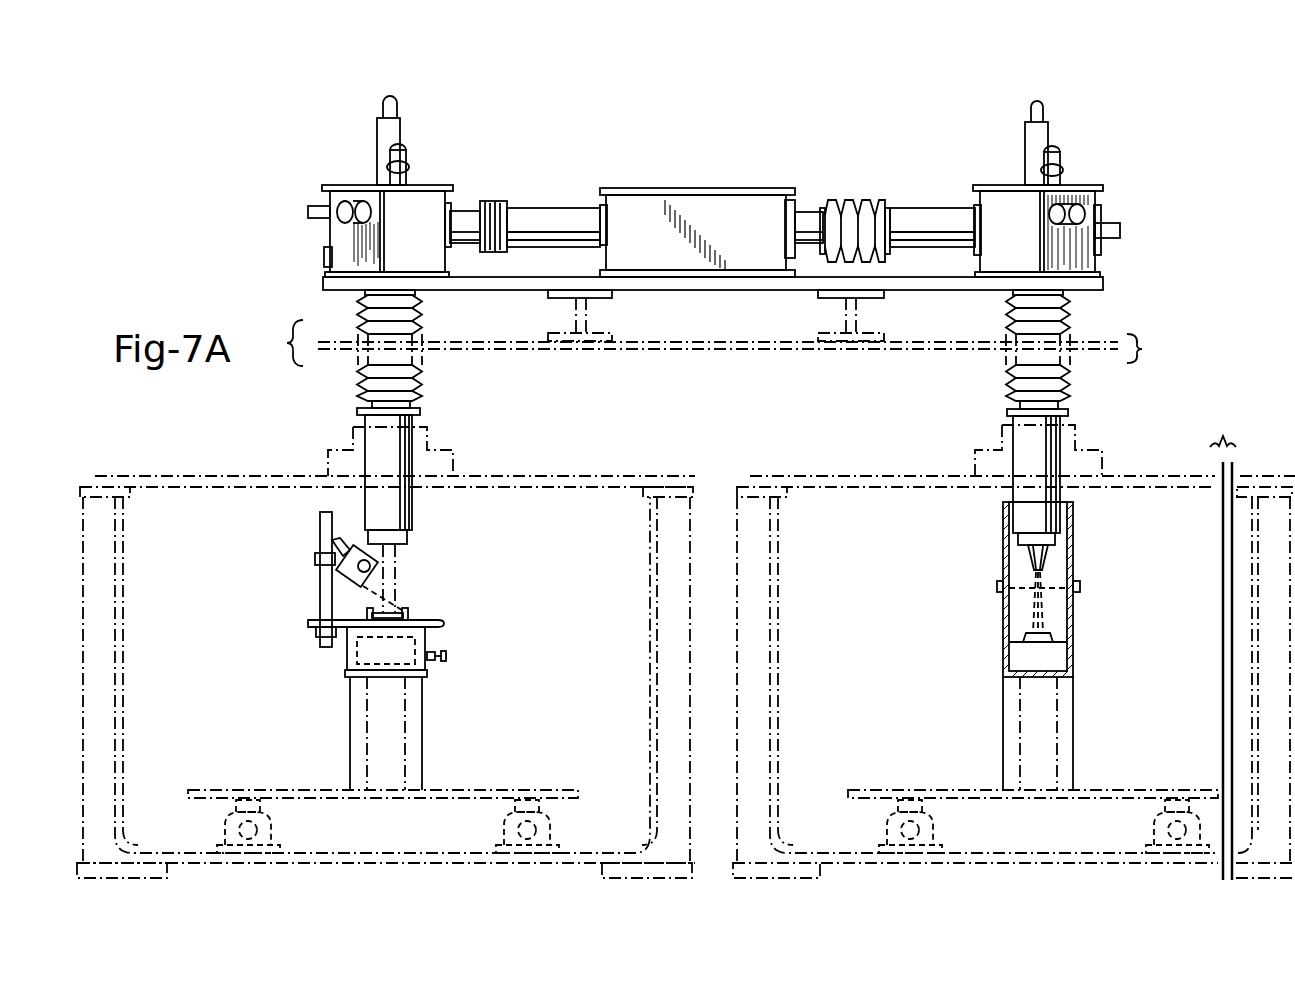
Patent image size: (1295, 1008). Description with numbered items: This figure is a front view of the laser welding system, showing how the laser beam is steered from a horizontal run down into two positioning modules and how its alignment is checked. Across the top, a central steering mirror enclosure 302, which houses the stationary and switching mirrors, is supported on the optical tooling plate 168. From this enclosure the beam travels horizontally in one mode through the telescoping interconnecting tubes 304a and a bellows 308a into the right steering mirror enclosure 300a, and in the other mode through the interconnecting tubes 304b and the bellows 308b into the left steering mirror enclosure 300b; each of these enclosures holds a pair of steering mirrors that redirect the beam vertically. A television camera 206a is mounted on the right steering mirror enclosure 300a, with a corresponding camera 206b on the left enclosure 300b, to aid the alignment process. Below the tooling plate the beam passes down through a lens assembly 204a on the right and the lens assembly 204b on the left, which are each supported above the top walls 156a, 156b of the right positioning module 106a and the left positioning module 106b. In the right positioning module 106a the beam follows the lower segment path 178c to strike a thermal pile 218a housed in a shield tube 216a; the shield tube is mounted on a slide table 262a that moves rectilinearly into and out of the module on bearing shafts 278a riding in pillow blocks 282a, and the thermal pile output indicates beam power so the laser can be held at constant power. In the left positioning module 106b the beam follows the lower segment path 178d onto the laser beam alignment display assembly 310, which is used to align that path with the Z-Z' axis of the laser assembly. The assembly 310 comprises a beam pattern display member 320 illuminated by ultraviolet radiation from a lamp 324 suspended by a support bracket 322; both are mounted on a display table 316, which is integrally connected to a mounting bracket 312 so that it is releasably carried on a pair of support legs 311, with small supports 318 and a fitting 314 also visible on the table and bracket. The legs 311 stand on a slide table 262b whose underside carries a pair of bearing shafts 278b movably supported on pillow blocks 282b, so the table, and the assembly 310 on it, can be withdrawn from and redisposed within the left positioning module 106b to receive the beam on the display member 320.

The right positioning module 106a is at (1014, 651).
The left positioning module 106b is at (386, 650).
The cabinet top wall 156a is at (805, 475).
The cabinet top wall 156b is at (488, 490).
The optical tooling plate 168 is at (672, 290).
The lower segment path 178c is at (1036, 606).
The lower segment path 178d is at (400, 568).
The beam delivery column 204a is at (1062, 468).
The lens assembly 204b is at (416, 452).
The cylinder 206a is at (1047, 135).
The cylinder 206b is at (395, 128).
The shield tube 216a is at (1075, 562).
The thermal pile 218a is at (1052, 634).
The slide table 262a is at (1144, 790).
The slide table 262b is at (473, 790).
The bearing 278a is at (1150, 812).
The bearing shafts 278b is at (545, 812).
The bearing base 282a is at (1148, 832).
The pillow blocks 282b is at (545, 833).
The right steering mirror enclosure 300a is at (1094, 257).
The left steering mirror enclosure 300b is at (333, 241).
The steering mirror enclosure 302 is at (778, 207).
The telescoping interconnecting tubes 304a is at (900, 213).
The interconnecting tubes 304b is at (530, 210).
The bellows 308a is at (850, 205).
The bellows 308b is at (492, 204).
The laser beam alignment display assembly 310 is at (465, 580).
The support legs 311 is at (422, 738).
The mounting bracket 312 is at (428, 637).
The fitting 314 is at (448, 655).
The display table 316 is at (440, 622).
The sample support 318 is at (404, 612).
The beam pattern display member 320 is at (378, 620).
The support bracket 322 is at (320, 570).
The lamp 324 is at (336, 578).